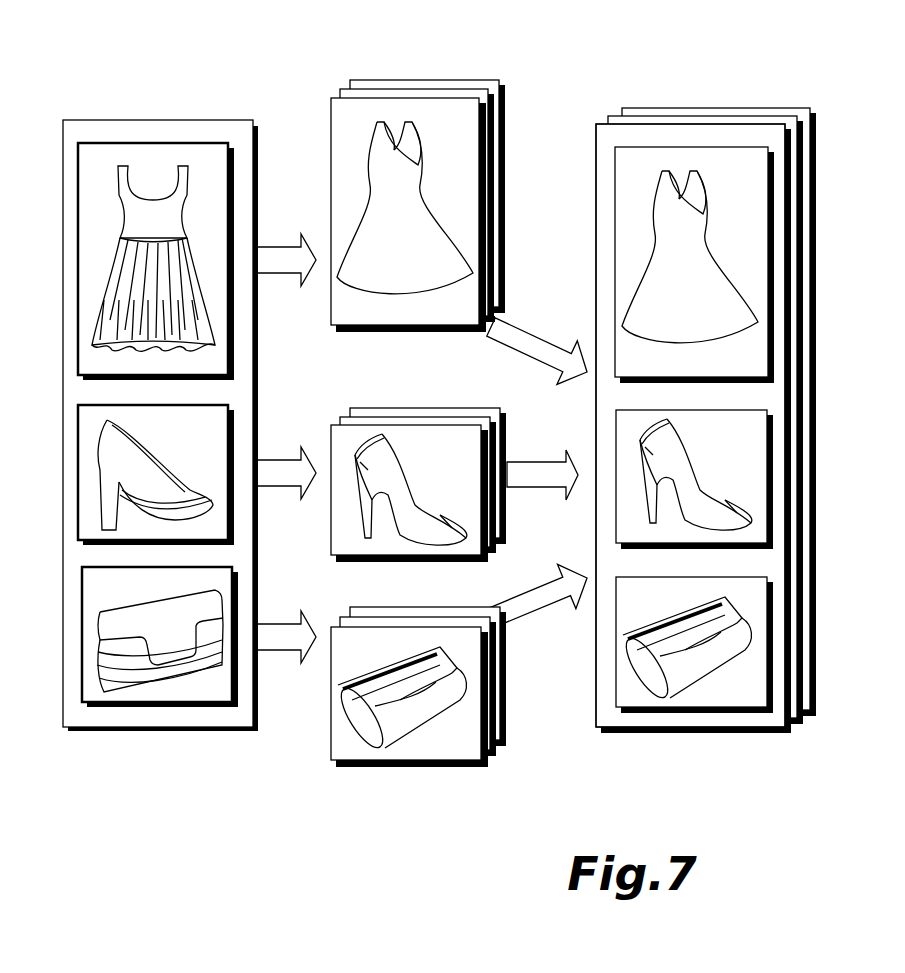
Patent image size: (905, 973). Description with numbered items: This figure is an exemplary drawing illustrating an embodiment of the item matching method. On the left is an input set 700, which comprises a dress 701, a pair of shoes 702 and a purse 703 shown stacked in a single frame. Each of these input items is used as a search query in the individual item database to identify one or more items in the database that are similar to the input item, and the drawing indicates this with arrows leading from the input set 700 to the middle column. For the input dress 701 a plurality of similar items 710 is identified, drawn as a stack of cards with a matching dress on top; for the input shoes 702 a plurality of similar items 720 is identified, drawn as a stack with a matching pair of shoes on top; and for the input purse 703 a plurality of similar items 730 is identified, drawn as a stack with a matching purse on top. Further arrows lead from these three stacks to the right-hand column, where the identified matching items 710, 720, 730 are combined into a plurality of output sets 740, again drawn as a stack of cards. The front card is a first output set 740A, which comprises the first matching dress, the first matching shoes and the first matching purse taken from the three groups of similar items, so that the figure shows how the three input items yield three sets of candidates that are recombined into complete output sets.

The input set 700 is at (150, 120).
The dress 701 is at (77, 201).
The pair of shoes 702 is at (77, 441).
The purse 703 is at (81, 601).
The plurality of similar items 710 is at (508, 75).
The plurality of similar items 720 is at (500, 402).
The plurality of similar items 730 is at (333, 780).
The plurality of output sets 740 is at (813, 90).
The first output set 740A is at (595, 150).